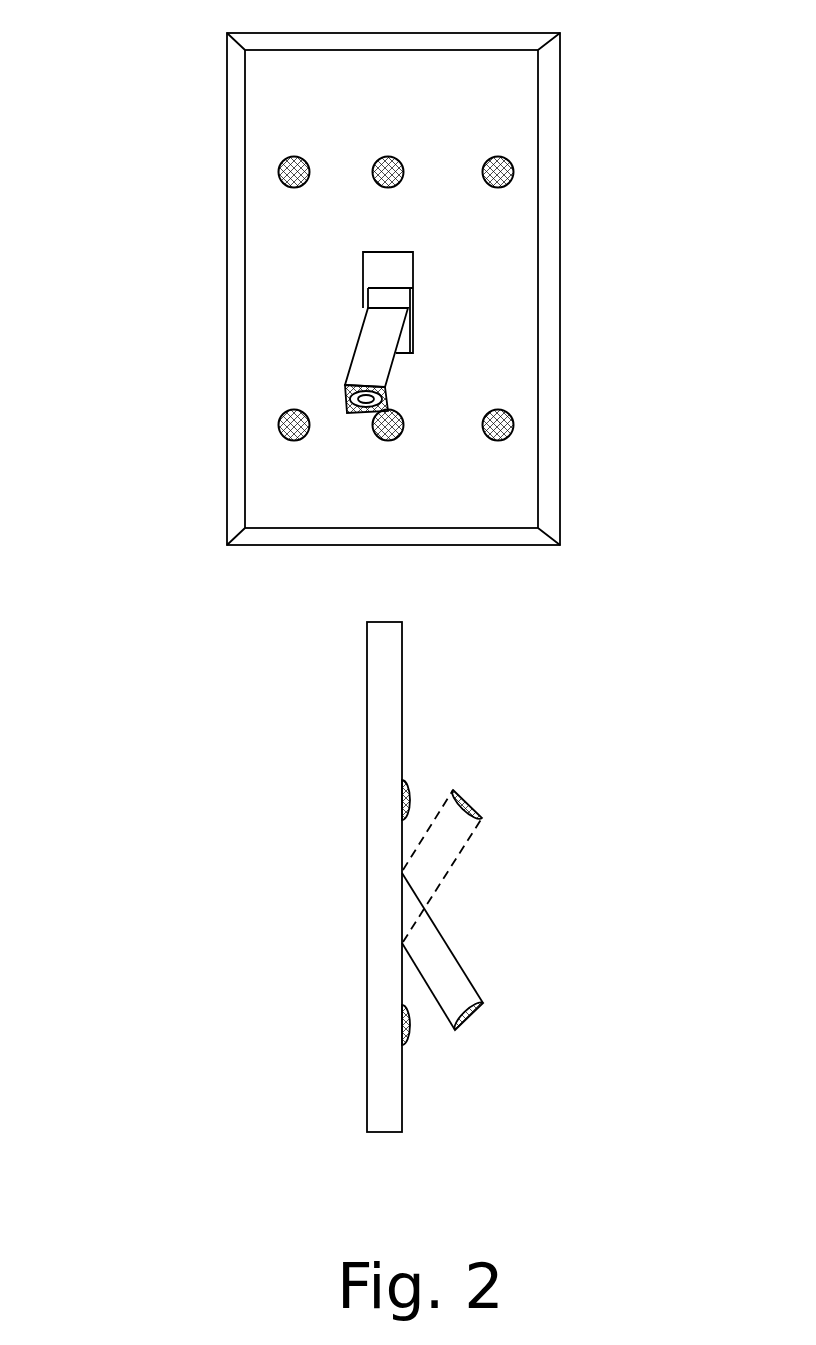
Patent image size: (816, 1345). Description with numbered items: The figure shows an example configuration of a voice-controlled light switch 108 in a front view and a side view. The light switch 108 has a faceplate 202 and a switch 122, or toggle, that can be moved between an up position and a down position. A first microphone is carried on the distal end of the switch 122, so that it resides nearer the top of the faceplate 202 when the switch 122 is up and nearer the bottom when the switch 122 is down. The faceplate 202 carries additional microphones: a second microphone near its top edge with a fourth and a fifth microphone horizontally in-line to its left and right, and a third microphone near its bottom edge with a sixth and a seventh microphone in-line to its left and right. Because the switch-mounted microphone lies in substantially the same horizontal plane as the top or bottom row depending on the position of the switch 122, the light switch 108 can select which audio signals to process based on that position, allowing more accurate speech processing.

The voice-controlled light switch 108 is at (148, 57).
The faceplate 202 is at (313, 72).
The switch 122 is at (368, 342).